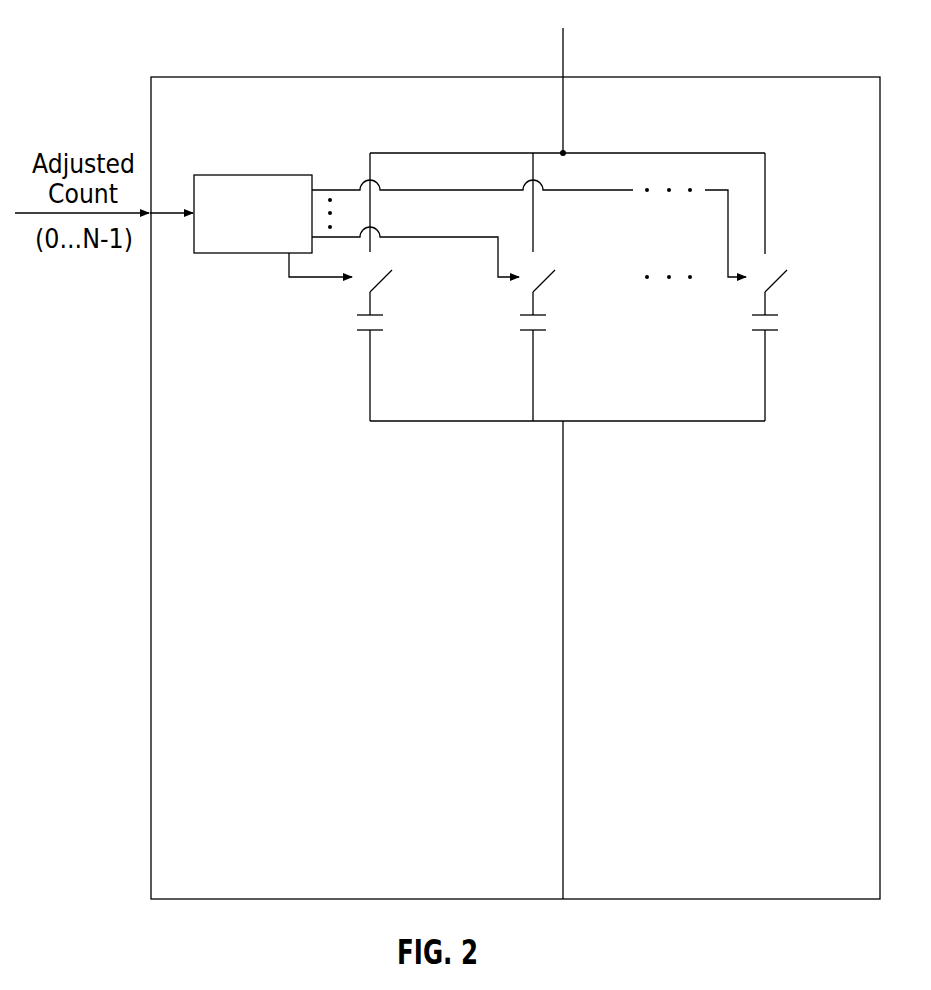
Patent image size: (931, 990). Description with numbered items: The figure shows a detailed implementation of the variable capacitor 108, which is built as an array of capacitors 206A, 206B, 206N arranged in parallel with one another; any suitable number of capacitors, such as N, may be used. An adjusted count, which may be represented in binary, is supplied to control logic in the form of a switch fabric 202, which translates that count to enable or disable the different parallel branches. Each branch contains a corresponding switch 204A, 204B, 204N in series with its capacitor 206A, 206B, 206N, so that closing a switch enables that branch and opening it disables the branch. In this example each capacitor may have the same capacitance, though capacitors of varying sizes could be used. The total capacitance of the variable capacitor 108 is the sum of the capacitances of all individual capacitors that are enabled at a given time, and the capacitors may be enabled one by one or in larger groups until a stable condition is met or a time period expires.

The variable capacitor 108 is at (660, 77).
The switch fabric 202 is at (256, 175).
The switch 204A is at (380, 283).
The switch 204B is at (543, 283).
The switch 204N is at (775, 285).
The capacitor 206A is at (375, 333).
The capacitor 206B is at (538, 333).
The capacitor 206N is at (770, 333).